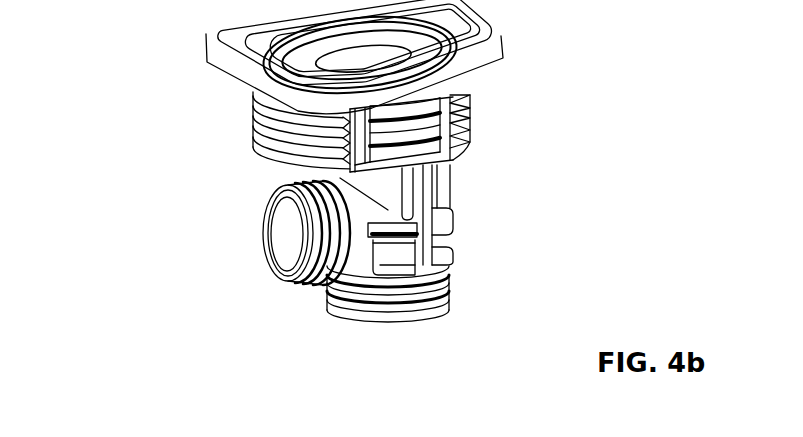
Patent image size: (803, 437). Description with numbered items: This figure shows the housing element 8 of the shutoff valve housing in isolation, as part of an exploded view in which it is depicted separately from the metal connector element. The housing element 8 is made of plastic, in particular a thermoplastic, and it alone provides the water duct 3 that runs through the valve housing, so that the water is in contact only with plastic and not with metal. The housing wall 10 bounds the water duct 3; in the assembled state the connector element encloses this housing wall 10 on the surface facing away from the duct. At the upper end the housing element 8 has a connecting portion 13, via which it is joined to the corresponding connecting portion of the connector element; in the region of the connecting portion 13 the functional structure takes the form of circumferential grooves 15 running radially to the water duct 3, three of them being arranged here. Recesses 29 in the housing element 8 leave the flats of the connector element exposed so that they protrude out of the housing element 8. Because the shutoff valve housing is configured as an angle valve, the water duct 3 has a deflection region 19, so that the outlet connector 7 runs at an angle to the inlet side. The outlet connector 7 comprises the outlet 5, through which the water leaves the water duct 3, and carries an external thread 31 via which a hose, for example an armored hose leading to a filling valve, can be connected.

The water duct 3 is at (375, 60).
The housing wall 10 is at (410, 62).
The connecting portion 13 is at (405, 112).
The circumferential grooves 15 is at (410, 133).
The recesses 29 is at (362, 137).
The outlet 5 is at (283, 232).
The outlet connector 7 is at (327, 278).
The external thread 31 is at (338, 265).
The deflection region 19 is at (413, 238).
The housing element 8 is at (420, 232).